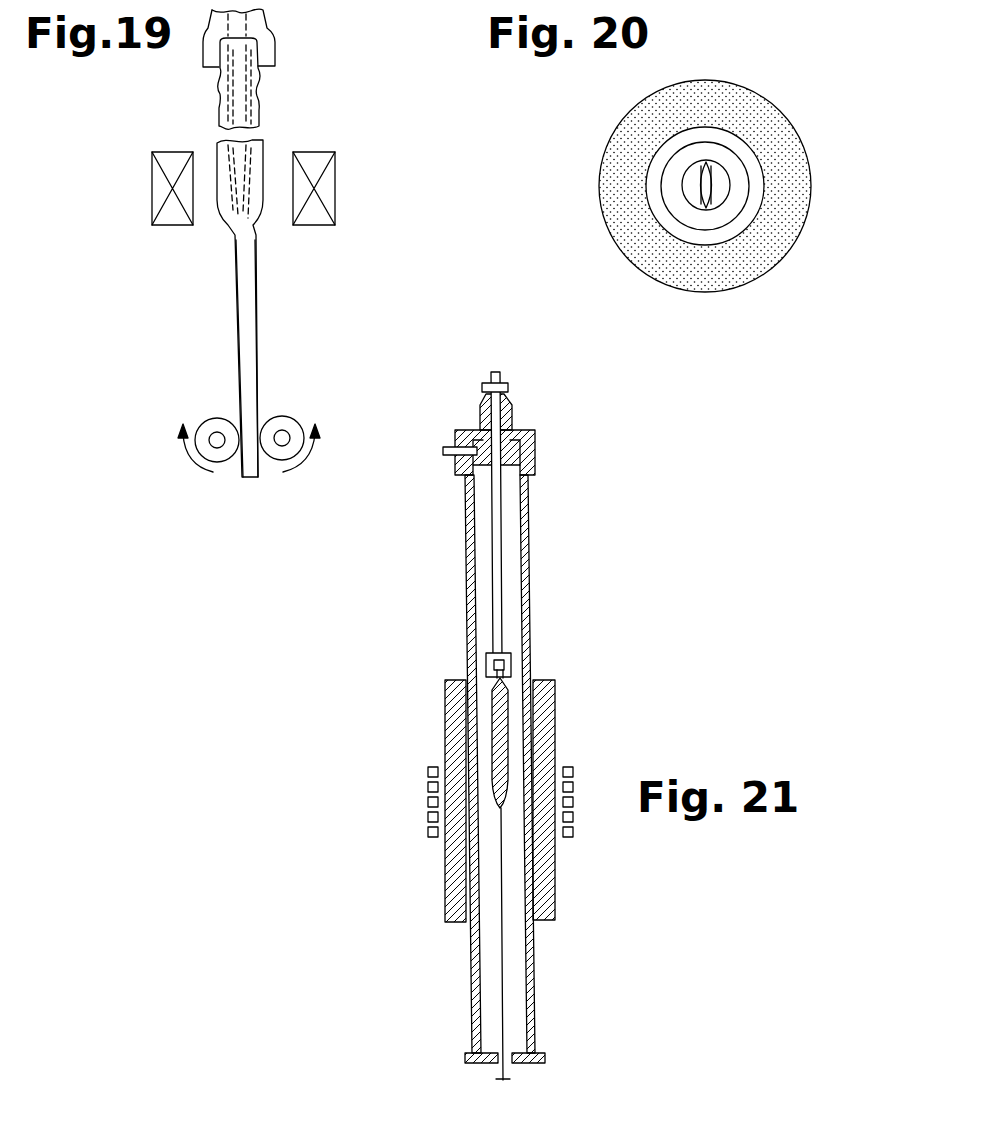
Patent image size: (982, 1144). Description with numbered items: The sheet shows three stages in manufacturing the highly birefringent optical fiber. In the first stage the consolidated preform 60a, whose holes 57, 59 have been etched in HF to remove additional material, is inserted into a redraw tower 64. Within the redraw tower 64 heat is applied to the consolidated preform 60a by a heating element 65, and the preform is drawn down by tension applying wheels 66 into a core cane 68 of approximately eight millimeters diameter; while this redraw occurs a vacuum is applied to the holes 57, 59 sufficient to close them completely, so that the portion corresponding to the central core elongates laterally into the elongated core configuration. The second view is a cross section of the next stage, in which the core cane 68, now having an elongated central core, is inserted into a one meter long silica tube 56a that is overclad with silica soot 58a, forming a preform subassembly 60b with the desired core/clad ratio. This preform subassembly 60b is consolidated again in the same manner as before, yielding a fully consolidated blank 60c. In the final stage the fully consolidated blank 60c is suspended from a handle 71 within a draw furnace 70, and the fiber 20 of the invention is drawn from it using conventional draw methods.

In FIG. 19, the hole 57 is at (226, 124).
In FIG. 19, the hole 59 is at (273, 99).
In FIG. 19, the consolidated preform 60a is at (229, 100).
In FIG. 20, the preform subassembly 60b is at (803, 102).
In FIG. 21, the fully consolidated blank 60c is at (488, 736).
In FIG. 19, the redraw tower 64 is at (362, 98).
In FIG. 19, the heating element 65 is at (152, 185).
In FIG. 19, the tension applying wheels 66 is at (283, 420).
In FIG. 19, the core cane 68 is at (238, 283).
In FIG. 20, the core cane 68 is at (677, 163).
In FIG. 20, the silica soot 58a is at (622, 215).
In FIG. 20, the silica tube 56a is at (755, 205).
In FIG. 21, the draw furnace 70 is at (338, 817).
In FIG. 21, the handle 71 is at (511, 668).
In FIG. 21, the fiber 20 is at (503, 952).